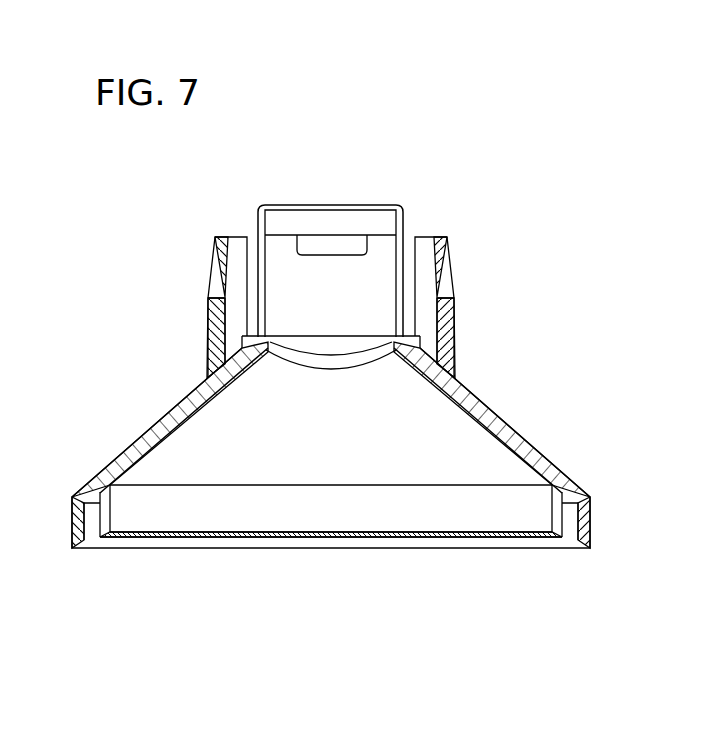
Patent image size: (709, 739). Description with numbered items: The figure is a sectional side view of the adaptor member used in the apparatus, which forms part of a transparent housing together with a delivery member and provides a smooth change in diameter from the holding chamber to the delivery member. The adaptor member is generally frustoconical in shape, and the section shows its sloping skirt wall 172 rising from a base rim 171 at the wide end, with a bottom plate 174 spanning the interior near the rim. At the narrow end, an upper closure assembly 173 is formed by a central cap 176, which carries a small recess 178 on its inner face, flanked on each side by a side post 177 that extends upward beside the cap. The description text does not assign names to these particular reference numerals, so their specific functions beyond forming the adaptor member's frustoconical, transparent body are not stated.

The base rim 171 is at (590, 527).
The conical skirt wall 172 is at (503, 417).
The upper closure assembly 173 is at (500, 205).
The bottom plate 174 is at (562, 493).
The central cap 176 is at (367, 297).
The side post 177 is at (210, 298).
The recess 178 is at (340, 247).